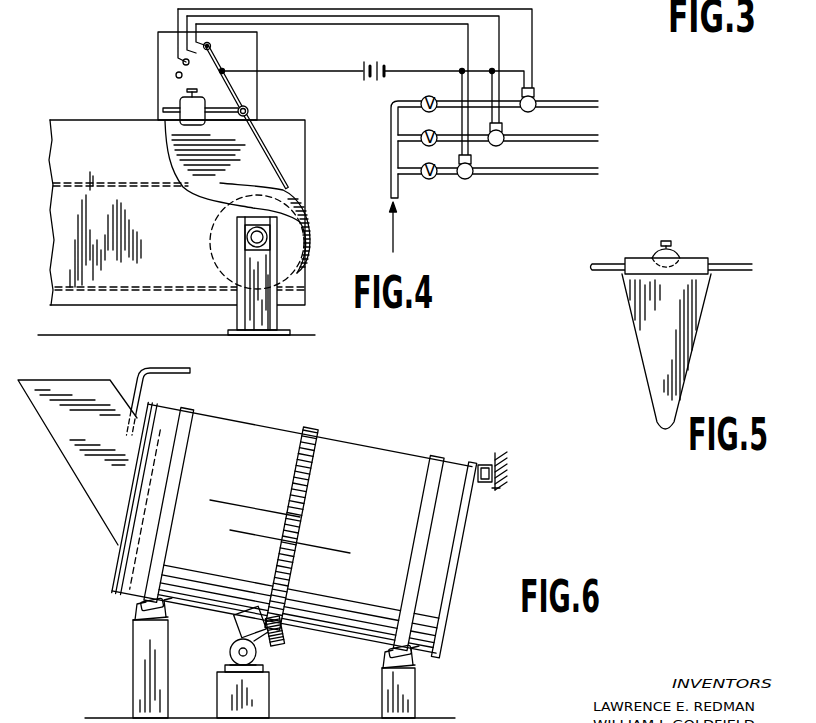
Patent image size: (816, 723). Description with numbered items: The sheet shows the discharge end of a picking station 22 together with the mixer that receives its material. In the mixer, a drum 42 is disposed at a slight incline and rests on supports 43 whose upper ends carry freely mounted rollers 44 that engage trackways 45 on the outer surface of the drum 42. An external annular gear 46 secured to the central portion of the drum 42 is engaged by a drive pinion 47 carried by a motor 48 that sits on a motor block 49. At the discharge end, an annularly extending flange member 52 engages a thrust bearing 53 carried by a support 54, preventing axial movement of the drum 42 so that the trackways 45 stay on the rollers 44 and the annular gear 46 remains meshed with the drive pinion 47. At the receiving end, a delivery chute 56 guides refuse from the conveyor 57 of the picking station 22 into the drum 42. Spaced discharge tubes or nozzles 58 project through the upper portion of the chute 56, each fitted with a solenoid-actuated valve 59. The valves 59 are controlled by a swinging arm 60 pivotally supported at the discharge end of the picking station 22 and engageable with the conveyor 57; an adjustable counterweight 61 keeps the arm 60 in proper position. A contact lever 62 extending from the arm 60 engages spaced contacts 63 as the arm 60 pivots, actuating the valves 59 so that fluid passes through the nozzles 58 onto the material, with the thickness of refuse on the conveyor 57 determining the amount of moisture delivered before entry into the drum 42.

In FIG. 4, the picking station 22 is at (110, 124).
In FIG. 6, the drum 42 is at (338, 453).
In FIG. 6, the supports 43 is at (133, 665).
In FIG. 6, the rollers 44 is at (162, 612).
In FIG. 6, the trackways 45 is at (190, 451).
In FIG. 6, the external annular gear 46 is at (300, 466).
In FIG. 6, the drive pinion 47 is at (282, 634).
In FIG. 6, the motor 48 is at (244, 630).
In FIG. 6, the motor block 49 is at (262, 692).
In FIG. 6, the annularly extending flange member 52 is at (445, 651).
In FIG. 6, the thrust bearing 53 is at (484, 464).
In FIG. 6, the support 54 is at (500, 458).
In FIG. 6, the delivery chute 56 is at (96, 426).
In FIG. 4, the conveyor 57 is at (308, 245).
In FIG. 4, the discharge tubes or nozzles 58 is at (598, 106).
In FIG. 6, the discharge tubes or nozzles 58 is at (145, 389).
In FIG. 4, the solenoid-actuated valve 59 is at (536, 112).
In FIG. 4, the swinging arm 60 is at (276, 163).
In FIG. 5, the swinging arm 60 is at (640, 318).
In FIG. 4, the counterweight 61 is at (200, 119).
In FIG. 5, the counterweight 61 is at (655, 251).
In FIG. 4, the contact lever 62 is at (219, 69).
In FIG. 4, the contacts 63 is at (176, 76).